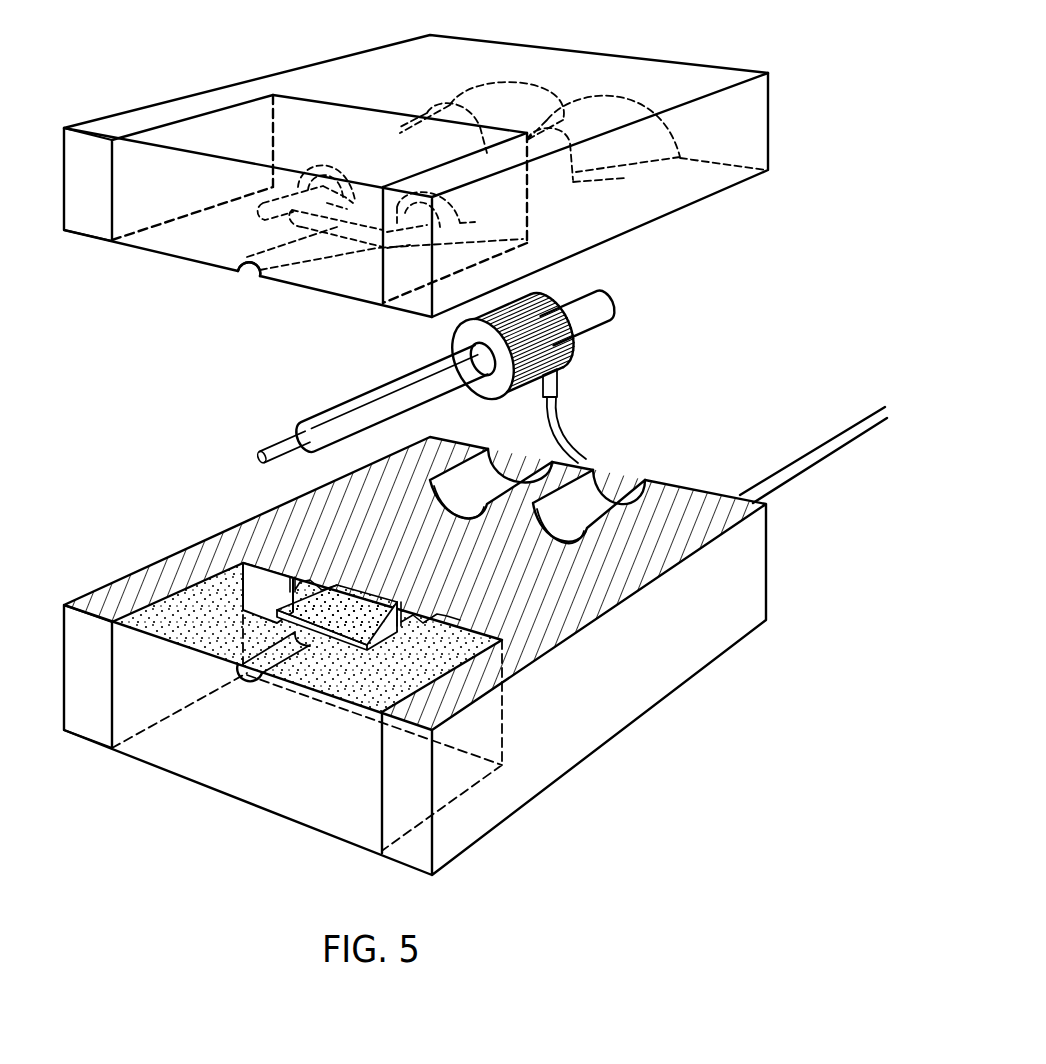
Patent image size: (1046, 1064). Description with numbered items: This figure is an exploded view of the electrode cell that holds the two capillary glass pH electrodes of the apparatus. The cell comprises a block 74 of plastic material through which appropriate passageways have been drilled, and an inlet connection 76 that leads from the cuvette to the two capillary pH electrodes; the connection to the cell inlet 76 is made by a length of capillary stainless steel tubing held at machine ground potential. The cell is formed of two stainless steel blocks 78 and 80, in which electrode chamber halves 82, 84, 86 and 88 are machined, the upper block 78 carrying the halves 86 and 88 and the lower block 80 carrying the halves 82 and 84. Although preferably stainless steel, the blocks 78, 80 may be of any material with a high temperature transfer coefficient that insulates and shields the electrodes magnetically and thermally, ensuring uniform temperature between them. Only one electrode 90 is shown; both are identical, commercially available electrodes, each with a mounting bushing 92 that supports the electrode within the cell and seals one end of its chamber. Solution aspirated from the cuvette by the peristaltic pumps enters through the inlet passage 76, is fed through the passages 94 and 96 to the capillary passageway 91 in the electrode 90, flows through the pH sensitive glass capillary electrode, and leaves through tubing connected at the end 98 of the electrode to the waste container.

The block 74 is at (168, 238).
The inlet connection 76 is at (252, 262).
The stainless steel block 78 is at (662, 200).
The stainless steel block 80 is at (587, 731).
The electrode chamber half 82 is at (477, 470).
The electrode chamber half 84 is at (578, 497).
The electrode chamber half 86 is at (552, 102).
The electrode chamber half 88 is at (645, 108).
The electrode 90 is at (367, 400).
The capillary passageway 91 is at (317, 427).
The mounting bushing 92 is at (528, 300).
The passage 94 is at (292, 586).
The passage 96 is at (403, 619).
The end of the electrode 98 is at (598, 323).